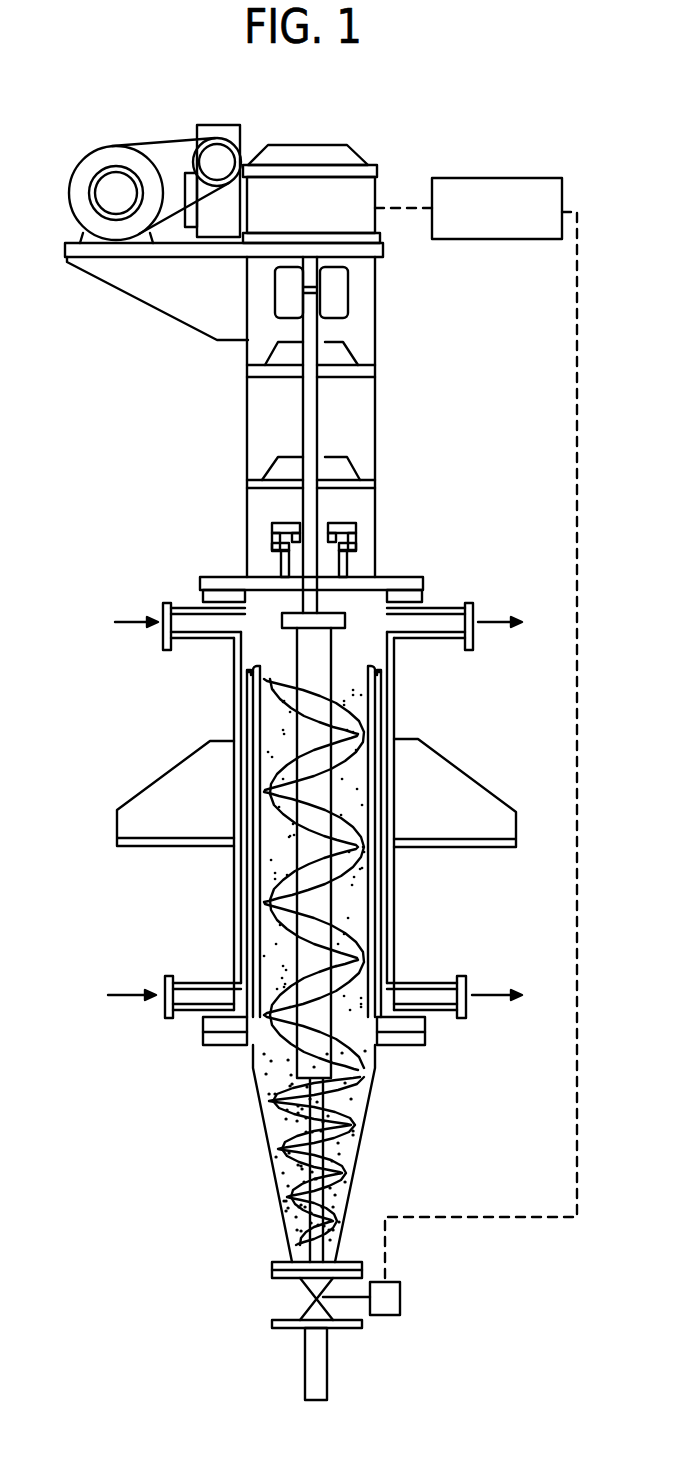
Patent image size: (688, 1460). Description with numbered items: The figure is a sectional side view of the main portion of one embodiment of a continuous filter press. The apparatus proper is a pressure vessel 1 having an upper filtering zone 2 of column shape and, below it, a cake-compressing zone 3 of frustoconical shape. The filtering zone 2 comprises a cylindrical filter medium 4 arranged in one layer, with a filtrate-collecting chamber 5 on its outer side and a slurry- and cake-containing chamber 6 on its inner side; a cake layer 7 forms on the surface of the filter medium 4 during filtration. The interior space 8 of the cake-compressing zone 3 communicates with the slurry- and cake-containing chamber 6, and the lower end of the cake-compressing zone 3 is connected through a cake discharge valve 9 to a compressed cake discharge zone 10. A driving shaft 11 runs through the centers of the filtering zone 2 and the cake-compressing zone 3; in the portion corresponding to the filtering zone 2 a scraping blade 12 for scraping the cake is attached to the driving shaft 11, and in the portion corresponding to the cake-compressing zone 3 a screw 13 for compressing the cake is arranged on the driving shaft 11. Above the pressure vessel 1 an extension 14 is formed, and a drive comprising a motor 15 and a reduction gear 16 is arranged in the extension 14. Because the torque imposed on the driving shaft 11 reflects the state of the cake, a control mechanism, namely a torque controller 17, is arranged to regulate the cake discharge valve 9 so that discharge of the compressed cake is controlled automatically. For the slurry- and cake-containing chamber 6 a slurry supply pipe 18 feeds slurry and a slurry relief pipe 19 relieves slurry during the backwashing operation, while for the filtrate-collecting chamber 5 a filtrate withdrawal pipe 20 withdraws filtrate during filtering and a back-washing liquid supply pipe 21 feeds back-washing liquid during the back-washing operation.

The pressure vessel 1 is at (432, 705).
The filtering zone 2 is at (245, 672).
The cake-compressing zone 3 is at (373, 1095).
The filter medium 4 is at (378, 875).
The filtrate-collecting chamber 5 is at (382, 923).
The slurry- and cake-containing chamber 6 is at (347, 783).
The cake layer 7 is at (268, 723).
The interior space 8 is at (355, 1108).
The cake discharge valve 9 is at (305, 1293).
The compressed cake discharge zone 10 is at (312, 1362).
The driving shaft 11 is at (307, 907).
The scraping blade 12 is at (250, 855).
The screw 13 is at (272, 1170).
The extension 14 is at (378, 415).
The motor 15 is at (77, 170).
The reduction gear 16 is at (325, 145).
The torque controller 17 is at (528, 178).
The slurry supply pipe 18 is at (193, 606).
The slurry relief pipe 19 is at (447, 608).
The filtrate withdrawal pipe 20 is at (425, 982).
The back-washing liquid supply pipe 21 is at (210, 985).